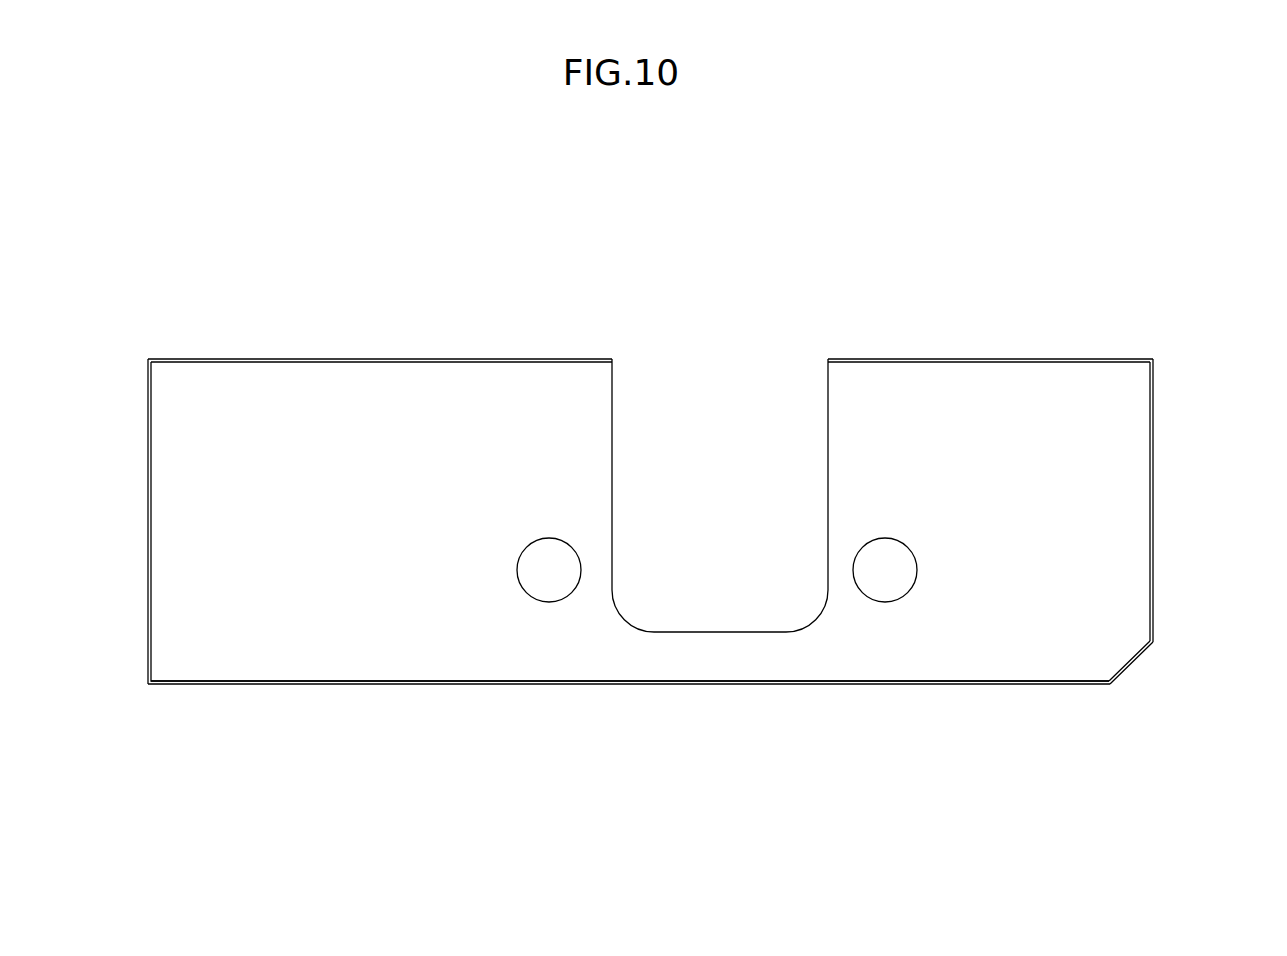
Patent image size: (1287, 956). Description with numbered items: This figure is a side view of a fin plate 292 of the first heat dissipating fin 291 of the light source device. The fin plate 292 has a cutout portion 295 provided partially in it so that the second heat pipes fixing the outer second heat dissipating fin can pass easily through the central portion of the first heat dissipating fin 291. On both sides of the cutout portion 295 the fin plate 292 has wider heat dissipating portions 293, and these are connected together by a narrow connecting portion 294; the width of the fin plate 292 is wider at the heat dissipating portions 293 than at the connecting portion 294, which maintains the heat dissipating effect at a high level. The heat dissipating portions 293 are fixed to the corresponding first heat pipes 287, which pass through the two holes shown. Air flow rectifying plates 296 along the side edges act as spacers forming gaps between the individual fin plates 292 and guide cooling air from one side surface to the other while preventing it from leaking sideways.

The fin plate 292 is at (677, 454).
The first heat dissipating fin 291 is at (630, 521).
The air flow rectifying plate 296 is at (147, 548).
The cutout portion 295 is at (715, 425).
The heat dissipating portion 293 is at (325, 670).
The connecting portion 294 is at (723, 670).
The first heat pipe 287 is at (551, 583).